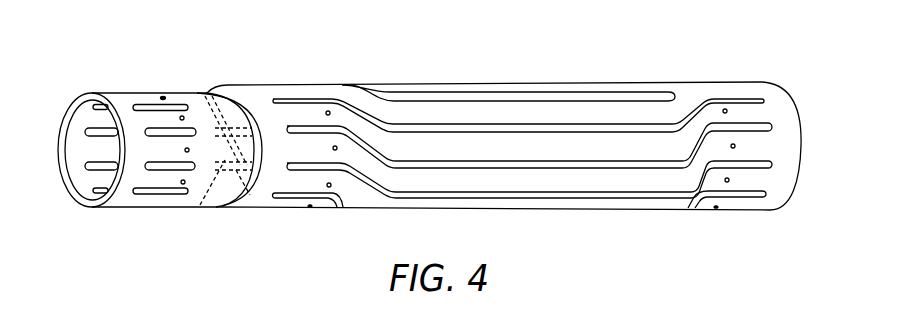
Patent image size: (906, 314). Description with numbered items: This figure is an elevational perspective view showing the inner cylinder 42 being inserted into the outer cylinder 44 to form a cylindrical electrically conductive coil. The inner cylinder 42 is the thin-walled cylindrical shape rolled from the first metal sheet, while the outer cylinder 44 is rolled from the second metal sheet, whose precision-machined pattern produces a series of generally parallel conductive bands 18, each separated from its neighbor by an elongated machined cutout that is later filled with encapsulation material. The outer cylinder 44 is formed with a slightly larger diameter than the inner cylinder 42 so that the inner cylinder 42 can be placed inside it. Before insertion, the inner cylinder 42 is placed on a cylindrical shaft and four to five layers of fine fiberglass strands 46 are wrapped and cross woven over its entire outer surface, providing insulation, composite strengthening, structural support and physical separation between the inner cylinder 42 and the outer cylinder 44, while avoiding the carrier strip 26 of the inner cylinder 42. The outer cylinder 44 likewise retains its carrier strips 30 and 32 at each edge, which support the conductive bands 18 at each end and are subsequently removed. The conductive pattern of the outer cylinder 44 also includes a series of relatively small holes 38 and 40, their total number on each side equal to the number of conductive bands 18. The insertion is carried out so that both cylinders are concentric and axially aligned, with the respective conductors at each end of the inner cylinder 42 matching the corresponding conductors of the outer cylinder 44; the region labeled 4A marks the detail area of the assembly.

The conductive bands 18 is at (490, 108).
The carrier strip 26 is at (121, 207).
The carrier strip 30 is at (268, 206).
The carrier strip 32 is at (772, 208).
The holes 38 is at (710, 88).
The holes 40 is at (315, 92).
The inner cylinder 42 is at (73, 90).
The outer cylinder 44 is at (588, 43).
The fiberglass strands 46 is at (197, 92).
The detail view area 4A is at (236, 203).